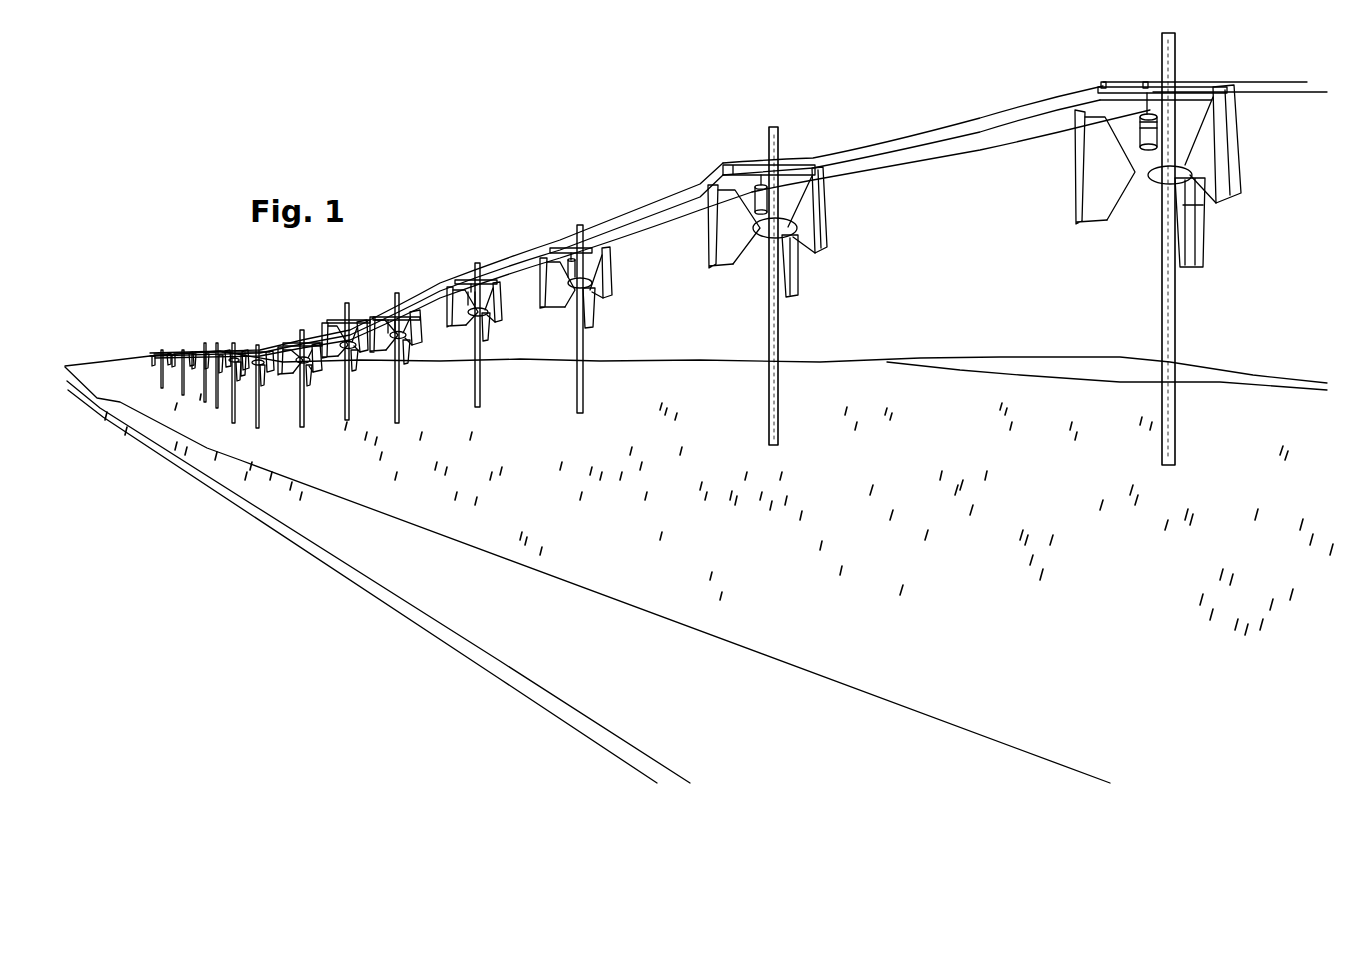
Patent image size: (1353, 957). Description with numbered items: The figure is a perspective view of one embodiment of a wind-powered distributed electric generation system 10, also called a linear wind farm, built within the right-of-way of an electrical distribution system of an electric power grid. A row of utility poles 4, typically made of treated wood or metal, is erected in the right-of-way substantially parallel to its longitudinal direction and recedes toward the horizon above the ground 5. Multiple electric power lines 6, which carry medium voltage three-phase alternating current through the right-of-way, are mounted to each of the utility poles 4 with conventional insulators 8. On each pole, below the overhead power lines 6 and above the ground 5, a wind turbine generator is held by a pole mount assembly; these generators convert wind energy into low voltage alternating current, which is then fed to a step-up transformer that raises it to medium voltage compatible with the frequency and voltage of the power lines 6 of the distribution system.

The utility pole 4 is at (774, 127).
The ground 5 is at (882, 391).
The electric power line 6 is at (930, 158).
The insulator 8 is at (1103, 83).
The distributed generation system 10 is at (738, 249).